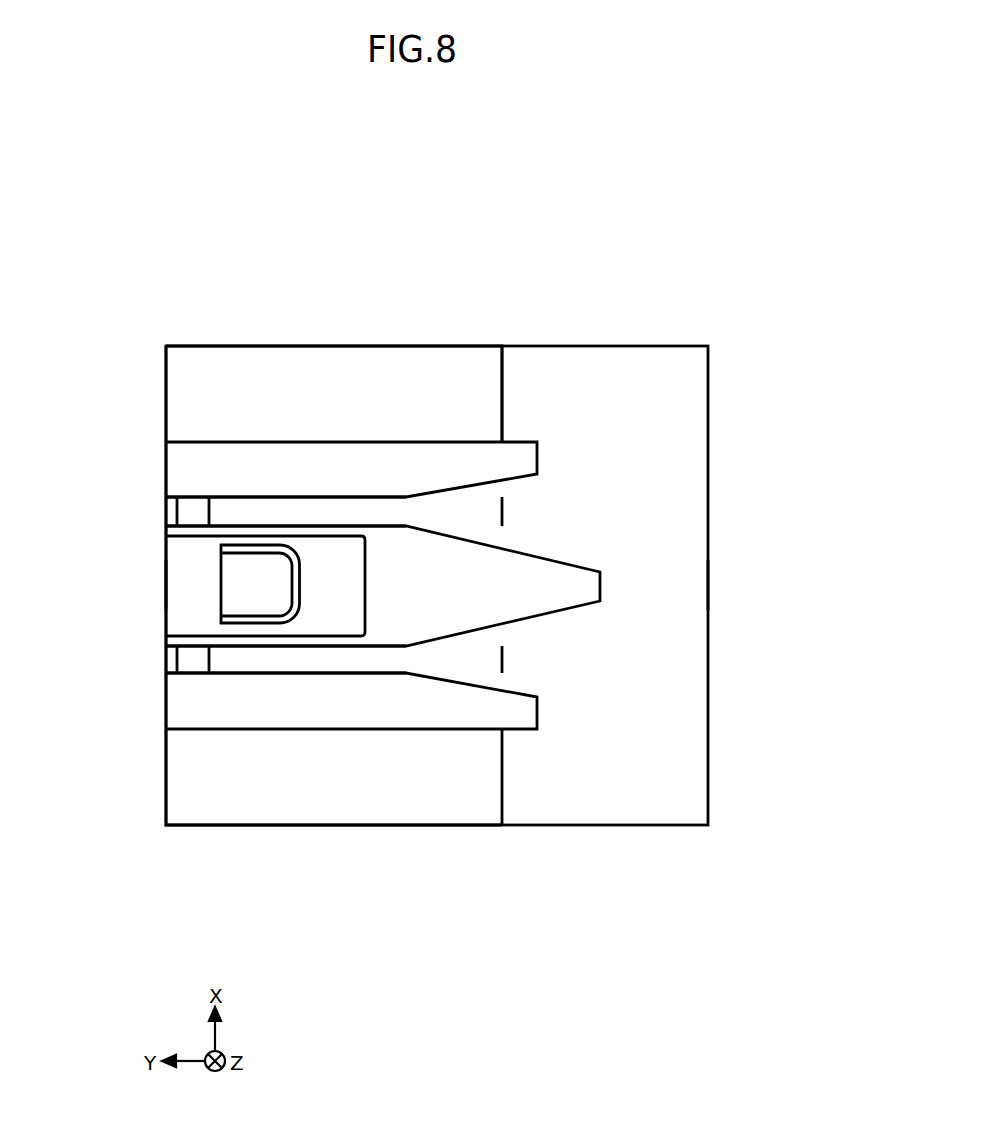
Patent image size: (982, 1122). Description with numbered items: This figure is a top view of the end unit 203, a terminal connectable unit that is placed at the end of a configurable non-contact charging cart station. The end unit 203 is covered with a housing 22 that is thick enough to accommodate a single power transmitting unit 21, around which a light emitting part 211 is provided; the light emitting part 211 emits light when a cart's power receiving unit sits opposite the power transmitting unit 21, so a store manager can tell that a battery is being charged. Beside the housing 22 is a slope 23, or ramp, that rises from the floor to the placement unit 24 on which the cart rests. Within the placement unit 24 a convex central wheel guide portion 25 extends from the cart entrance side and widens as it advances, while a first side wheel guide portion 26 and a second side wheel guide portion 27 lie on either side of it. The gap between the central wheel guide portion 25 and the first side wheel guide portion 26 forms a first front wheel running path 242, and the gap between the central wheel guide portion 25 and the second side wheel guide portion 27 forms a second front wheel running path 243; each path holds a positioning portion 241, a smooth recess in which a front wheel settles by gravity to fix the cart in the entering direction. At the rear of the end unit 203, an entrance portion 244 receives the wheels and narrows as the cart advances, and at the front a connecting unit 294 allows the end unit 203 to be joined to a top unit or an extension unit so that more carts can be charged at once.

The end unit 203 is at (480, 207).
The power transmitting unit 21 is at (263, 570).
The light emitting part 211 is at (258, 616).
The housing 22 is at (403, 377).
The slope 23 is at (552, 377).
The placement unit 24 is at (132, 353).
The positioning portion 241 is at (192, 512).
The first front wheel running path 242 is at (311, 658).
The second front wheel running path 243 is at (353, 517).
The entrance portion 244 is at (745, 592).
The central wheel guide portion 25 is at (430, 593).
The first side wheel guide portion 26 is at (363, 713).
The second side wheel guide portion 27 is at (295, 467).
The connecting unit 294 is at (123, 588).